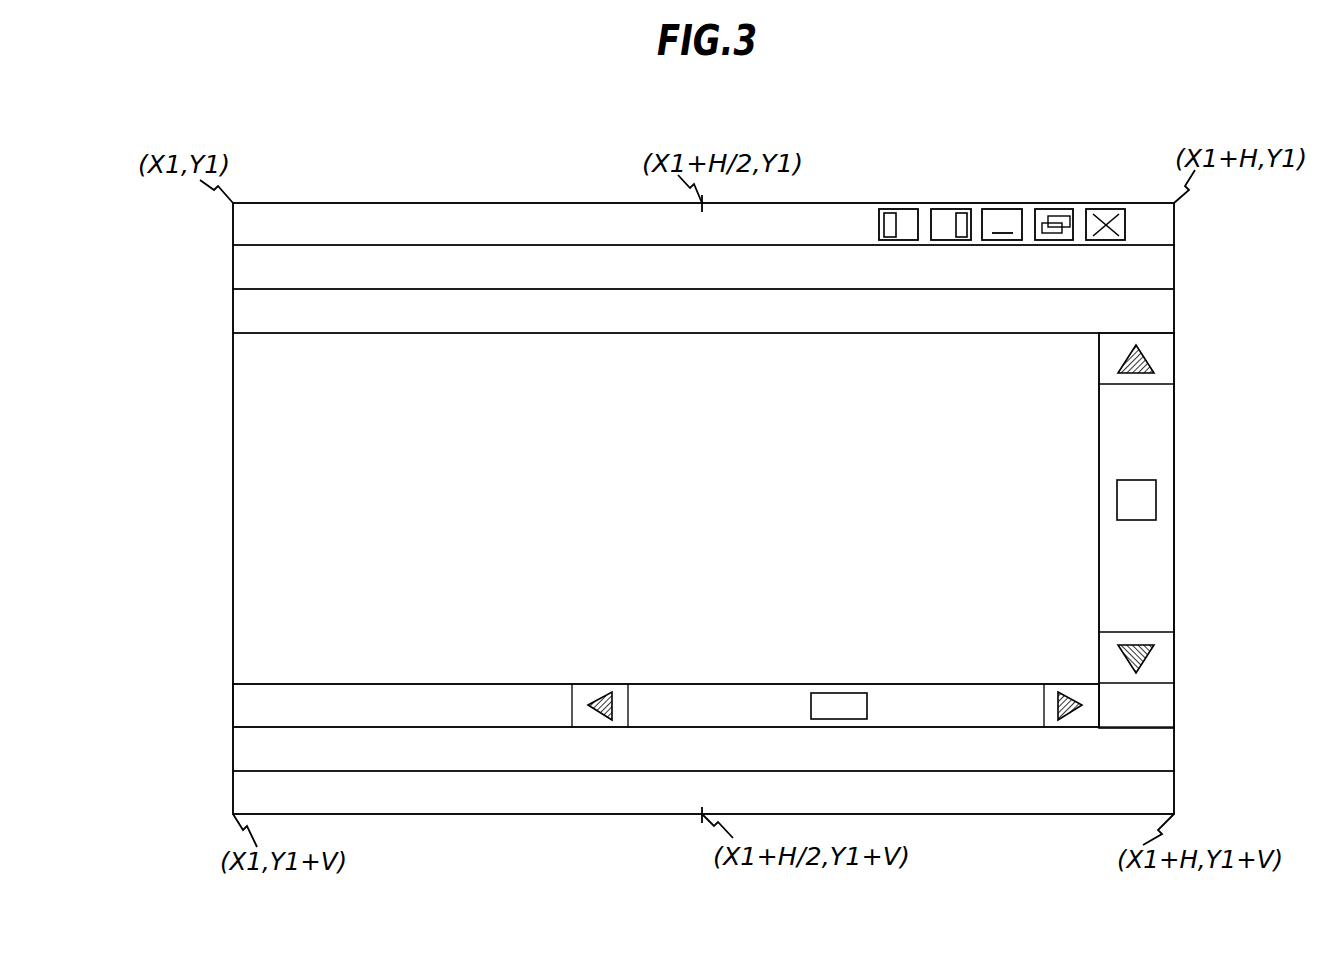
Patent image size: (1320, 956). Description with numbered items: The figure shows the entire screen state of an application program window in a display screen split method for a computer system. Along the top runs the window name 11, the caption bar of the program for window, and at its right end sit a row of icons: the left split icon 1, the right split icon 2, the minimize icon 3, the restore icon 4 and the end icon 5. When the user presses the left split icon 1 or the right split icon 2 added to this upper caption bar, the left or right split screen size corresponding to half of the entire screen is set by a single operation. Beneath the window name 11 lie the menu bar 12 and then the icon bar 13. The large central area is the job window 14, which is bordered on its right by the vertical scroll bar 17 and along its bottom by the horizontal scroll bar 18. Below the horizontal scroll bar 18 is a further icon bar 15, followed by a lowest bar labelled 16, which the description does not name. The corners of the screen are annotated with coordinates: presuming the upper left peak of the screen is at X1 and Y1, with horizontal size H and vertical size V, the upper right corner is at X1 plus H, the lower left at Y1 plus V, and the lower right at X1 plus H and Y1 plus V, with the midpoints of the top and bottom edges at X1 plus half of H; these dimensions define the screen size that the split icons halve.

The left split icon 1 is at (893, 195).
The right split icon 2 is at (951, 187).
The minimize icon 3 is at (1002, 190).
The restore icon 4 is at (1054, 194).
The end icon 5 is at (1109, 194).
The window name 11 is at (673, 224).
The menu bar 12 is at (673, 267).
The icon bar 13 is at (673, 311).
The job window 14 is at (636, 508).
The icon bar 15 is at (673, 749).
The message bar 16 is at (673, 792).
The vertical scroll bar 17 is at (1169, 530).
The horizontal scroll bar 18 is at (666, 776).